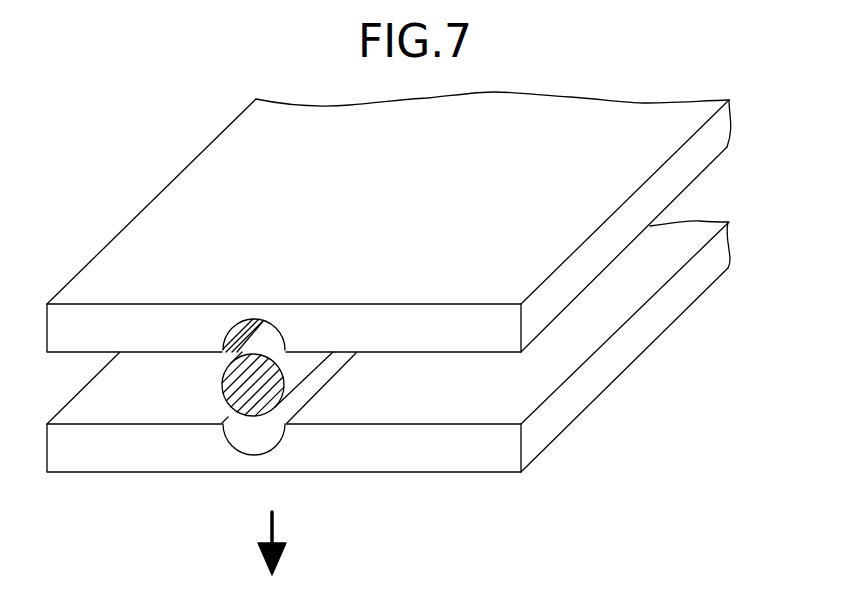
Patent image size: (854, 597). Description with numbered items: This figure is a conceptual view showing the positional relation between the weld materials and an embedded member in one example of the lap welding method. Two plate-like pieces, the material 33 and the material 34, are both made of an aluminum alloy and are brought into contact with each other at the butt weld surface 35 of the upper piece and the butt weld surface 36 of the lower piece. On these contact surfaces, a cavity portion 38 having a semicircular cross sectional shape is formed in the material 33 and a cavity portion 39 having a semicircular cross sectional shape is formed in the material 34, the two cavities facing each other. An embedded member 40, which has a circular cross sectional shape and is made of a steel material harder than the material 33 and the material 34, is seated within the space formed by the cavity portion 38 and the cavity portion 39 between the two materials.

The material 33 is at (686, 169).
The material 34 is at (640, 333).
The butt weld surface 35 is at (168, 352).
The butt weld surface 36 is at (160, 413).
The cavity portion 38 is at (268, 318).
The cavity portion 39 is at (278, 440).
The embedded member 40 is at (275, 382).